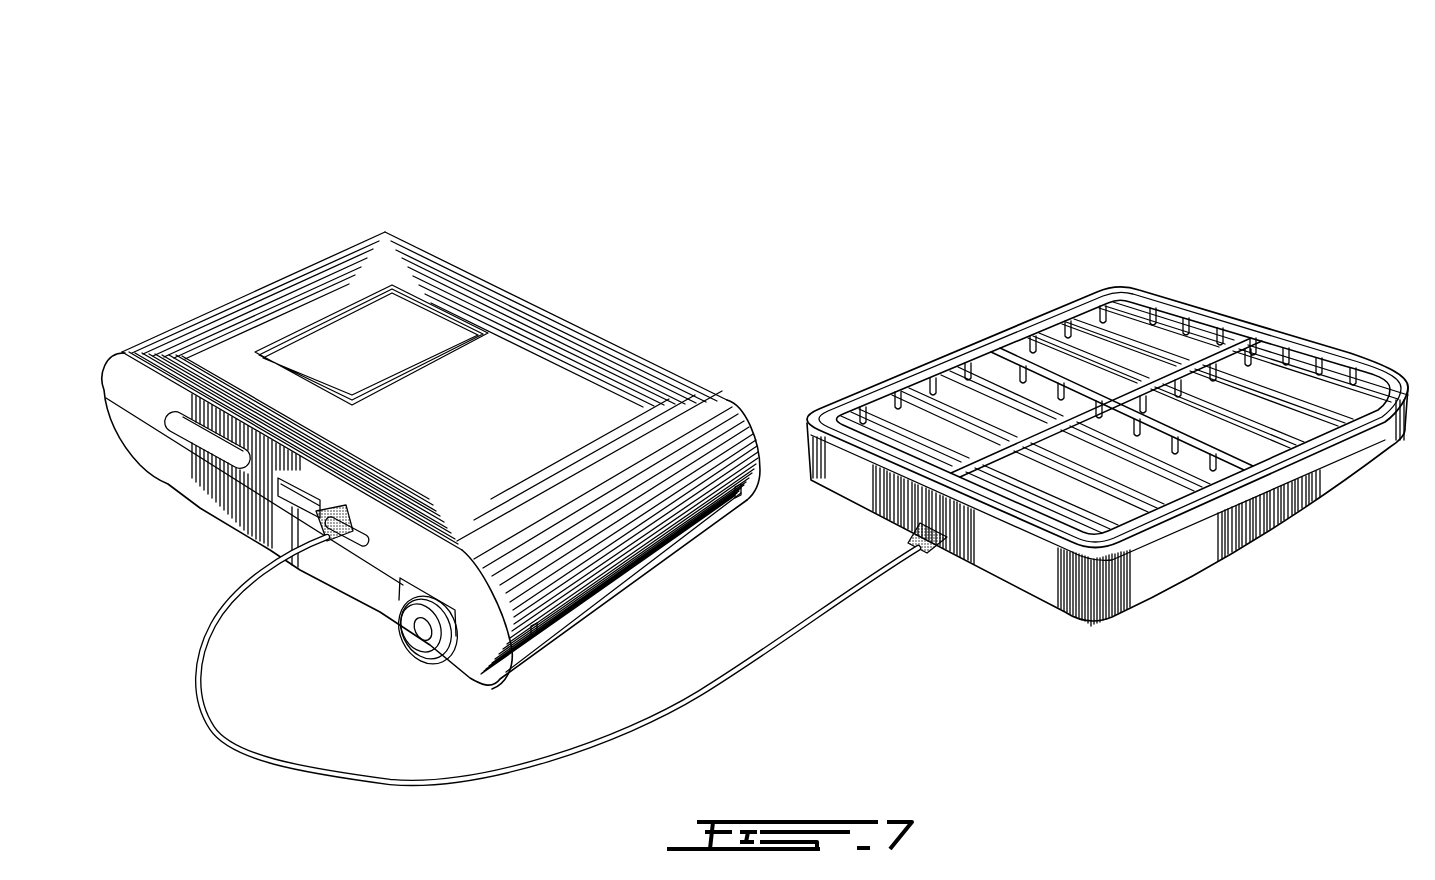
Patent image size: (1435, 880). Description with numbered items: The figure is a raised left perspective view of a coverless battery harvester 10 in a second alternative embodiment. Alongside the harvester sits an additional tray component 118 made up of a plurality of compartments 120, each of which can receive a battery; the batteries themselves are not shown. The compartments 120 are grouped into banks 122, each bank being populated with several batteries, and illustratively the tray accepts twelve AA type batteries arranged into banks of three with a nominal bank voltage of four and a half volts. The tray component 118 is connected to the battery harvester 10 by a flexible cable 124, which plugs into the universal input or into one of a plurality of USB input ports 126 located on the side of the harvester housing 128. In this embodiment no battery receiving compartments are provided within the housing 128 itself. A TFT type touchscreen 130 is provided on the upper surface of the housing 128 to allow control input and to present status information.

The battery harvester 10 is at (406, 178).
The tray component 118 is at (880, 390).
The compartments 120 is at (1212, 342).
The banks 122 is at (1258, 318).
The flexible cable 124 is at (706, 693).
The USB input ports 126 is at (283, 463).
The harvester housing 128 is at (132, 382).
The TFT type touchscreen 130 is at (436, 307).